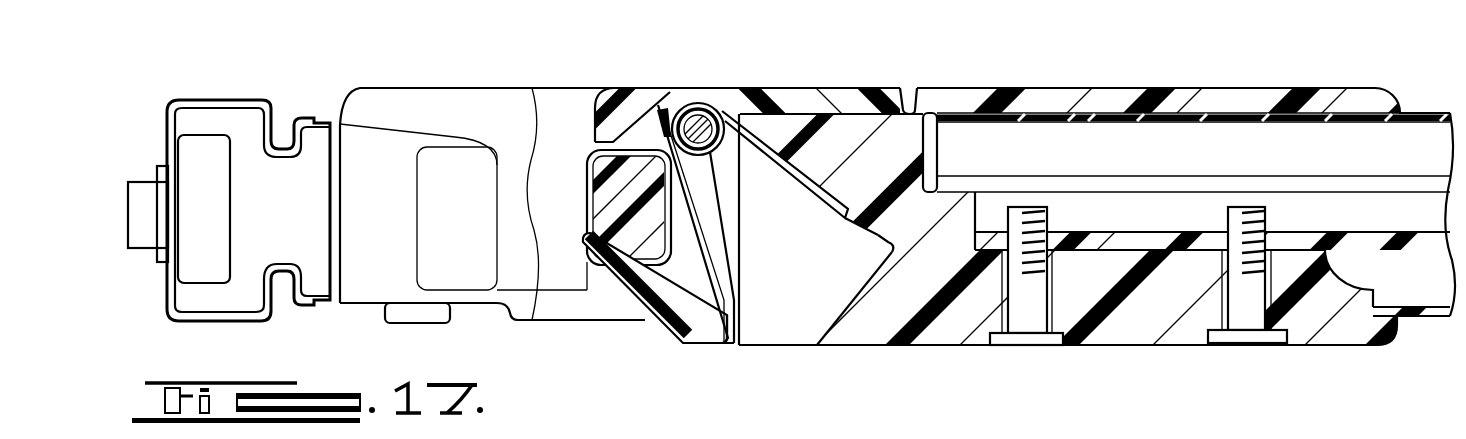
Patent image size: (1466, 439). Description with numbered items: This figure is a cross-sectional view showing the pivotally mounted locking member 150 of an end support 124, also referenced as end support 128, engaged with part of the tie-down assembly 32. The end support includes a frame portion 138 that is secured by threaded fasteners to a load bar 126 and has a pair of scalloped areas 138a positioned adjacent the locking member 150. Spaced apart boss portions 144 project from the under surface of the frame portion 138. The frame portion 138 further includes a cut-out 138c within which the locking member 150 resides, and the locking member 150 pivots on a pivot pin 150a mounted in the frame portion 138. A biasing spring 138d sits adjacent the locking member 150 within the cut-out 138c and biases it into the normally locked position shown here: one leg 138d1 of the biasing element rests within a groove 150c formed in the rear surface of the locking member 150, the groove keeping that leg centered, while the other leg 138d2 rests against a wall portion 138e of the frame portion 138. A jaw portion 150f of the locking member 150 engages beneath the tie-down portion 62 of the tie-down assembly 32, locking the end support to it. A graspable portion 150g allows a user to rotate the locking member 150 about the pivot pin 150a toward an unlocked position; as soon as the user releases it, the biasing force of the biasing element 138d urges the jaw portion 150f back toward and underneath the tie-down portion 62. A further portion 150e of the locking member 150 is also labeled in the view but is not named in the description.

The tie-down assembly 32 is at (158, 100).
The tie-down portion 62 is at (610, 197).
The end support 124 is at (1302, 373).
The load bar 126 is at (1421, 330).
The end support 128 is at (1257, 360).
The frame portion 138 is at (1130, 328).
The scalloped areas 138a is at (907, 110).
The cut-out 138c is at (786, 317).
The biasing spring 138d is at (738, 104).
The leg of biasing element 138d1 is at (732, 262).
The other leg of biasing element 138d2 is at (800, 178).
The wall portion 138e is at (887, 237).
The boss portions 144 is at (450, 316).
The locking member 150 is at (707, 72).
The pivot pin 150a is at (697, 123).
The groove 150c is at (733, 292).
The pawl bottom 150e is at (758, 391).
The jaw portion 150f is at (658, 282).
The graspable portion 150g is at (852, 95).